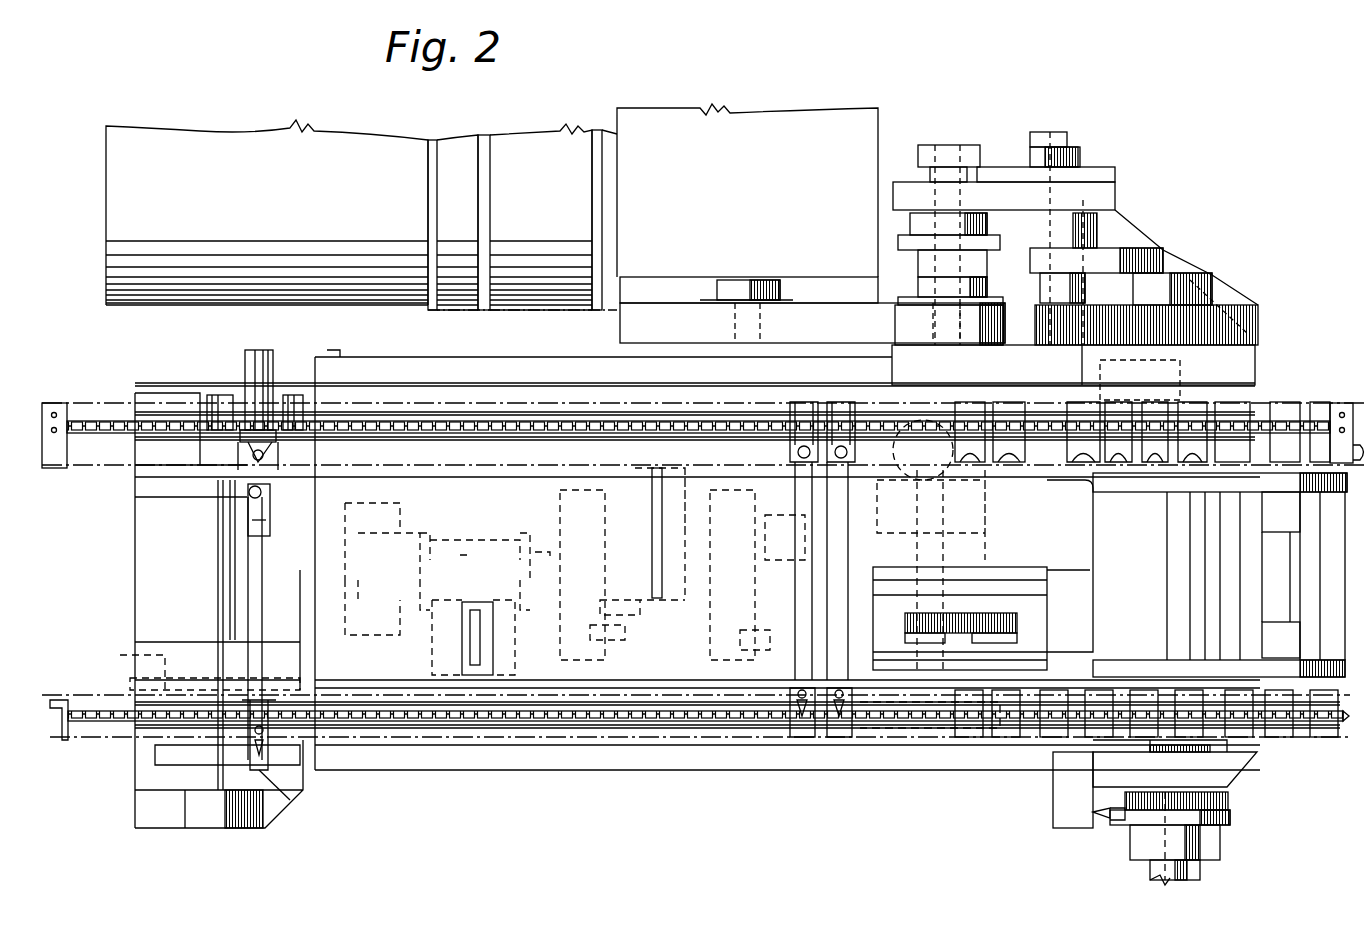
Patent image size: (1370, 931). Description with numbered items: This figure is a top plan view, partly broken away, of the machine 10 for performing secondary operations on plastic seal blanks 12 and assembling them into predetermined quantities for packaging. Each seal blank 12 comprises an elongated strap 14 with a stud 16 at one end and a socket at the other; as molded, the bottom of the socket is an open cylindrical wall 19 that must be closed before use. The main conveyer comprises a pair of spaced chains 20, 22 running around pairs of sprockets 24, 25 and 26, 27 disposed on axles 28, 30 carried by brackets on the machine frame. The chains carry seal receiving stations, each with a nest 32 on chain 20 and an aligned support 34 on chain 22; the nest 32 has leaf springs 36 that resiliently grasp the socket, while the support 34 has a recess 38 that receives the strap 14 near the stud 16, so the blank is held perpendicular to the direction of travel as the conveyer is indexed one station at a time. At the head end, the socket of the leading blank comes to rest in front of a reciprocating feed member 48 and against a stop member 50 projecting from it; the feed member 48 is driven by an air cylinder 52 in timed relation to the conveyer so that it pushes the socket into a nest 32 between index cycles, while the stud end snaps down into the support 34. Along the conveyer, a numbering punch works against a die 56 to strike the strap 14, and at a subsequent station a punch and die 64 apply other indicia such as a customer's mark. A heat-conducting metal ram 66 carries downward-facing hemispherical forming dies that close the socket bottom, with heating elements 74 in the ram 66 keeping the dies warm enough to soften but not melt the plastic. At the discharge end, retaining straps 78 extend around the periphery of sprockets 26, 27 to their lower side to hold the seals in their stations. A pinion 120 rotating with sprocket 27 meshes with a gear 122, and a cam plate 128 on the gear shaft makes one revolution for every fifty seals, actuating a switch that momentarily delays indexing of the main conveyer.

The machine 10 is at (677, 820).
The plastic seal blank 12 is at (245, 598).
The elongated strap 14 is at (250, 567).
The stud 16 is at (275, 782).
The cylindrical wall 19 is at (800, 420).
The chain 20 is at (880, 420).
The chain 22 is at (882, 728).
The sprocket 24 is at (102, 420).
The sprocket 25 is at (86, 730).
The sprocket 26 is at (1265, 415).
The sprocket 27 is at (1258, 725).
The axle 28 is at (135, 680).
The axle 30 is at (1165, 518).
The nest 32 is at (212, 420).
The support 34 is at (834, 738).
The leaf springs 36 is at (287, 440).
The recess 38 is at (967, 738).
The reciprocating feed member 48 is at (280, 520).
The stop member 50 is at (263, 497).
The air cylinder 52 is at (252, 356).
The die 56 is at (470, 632).
The die 64 is at (652, 515).
The ram 66 is at (905, 465).
The heating elements 74 is at (1088, 405).
The retaining straps 78 is at (1330, 482).
The pinion 120 is at (1112, 816).
The gear 122 is at (1228, 800).
The cam plate 128 is at (1228, 826).